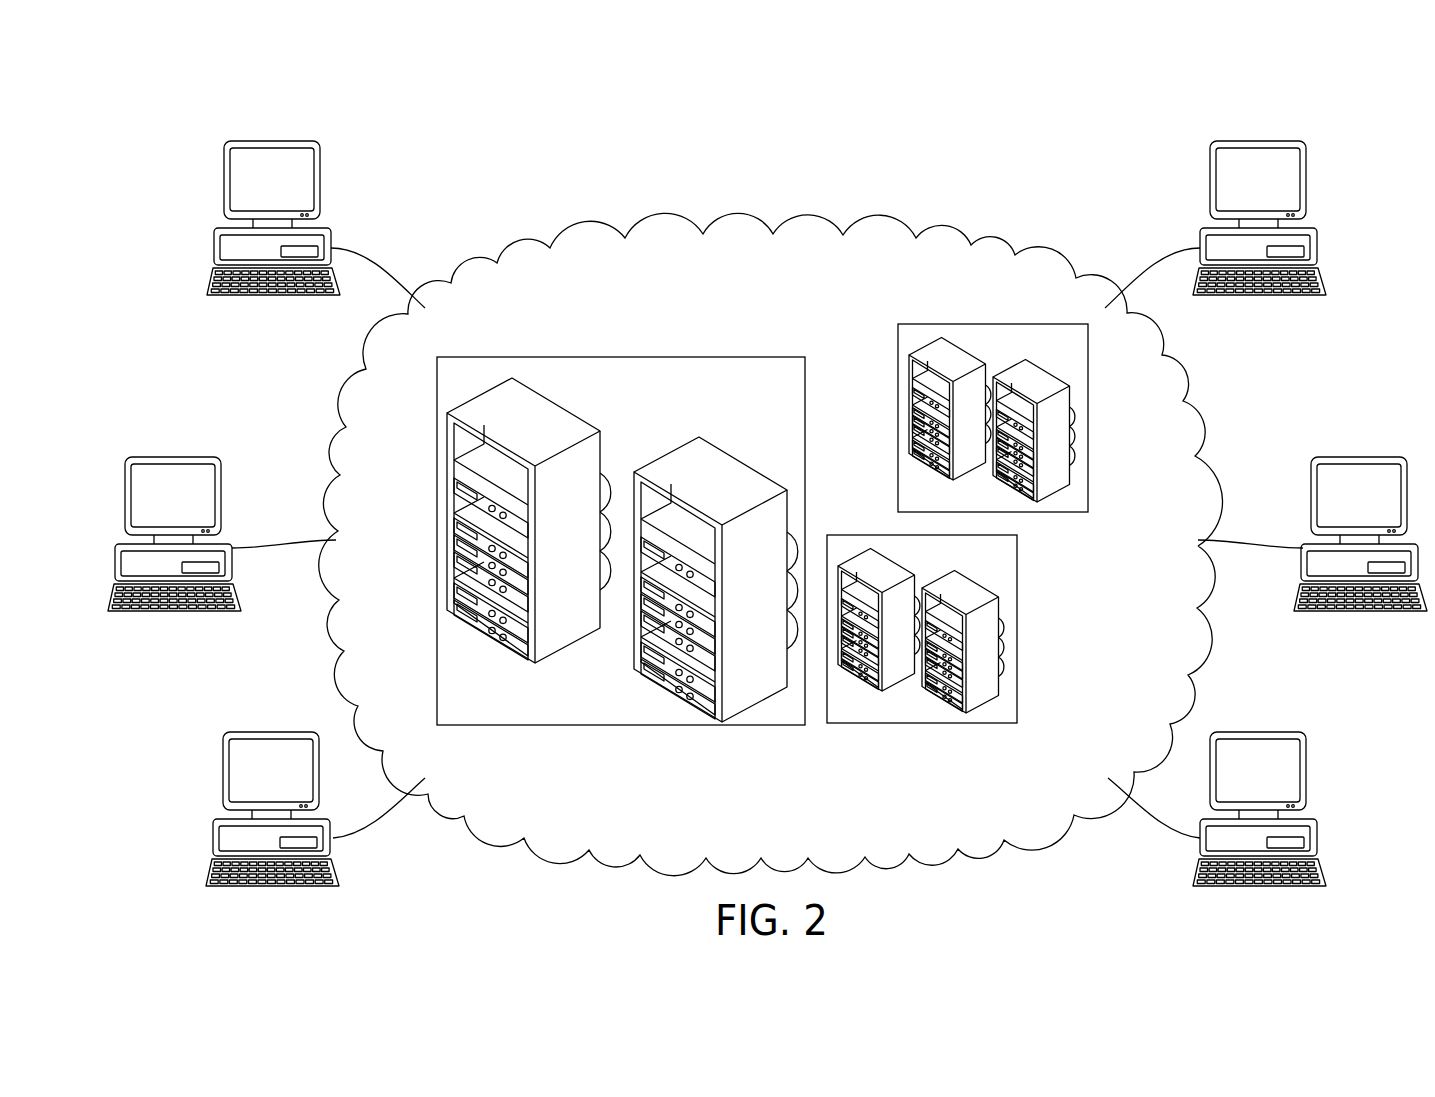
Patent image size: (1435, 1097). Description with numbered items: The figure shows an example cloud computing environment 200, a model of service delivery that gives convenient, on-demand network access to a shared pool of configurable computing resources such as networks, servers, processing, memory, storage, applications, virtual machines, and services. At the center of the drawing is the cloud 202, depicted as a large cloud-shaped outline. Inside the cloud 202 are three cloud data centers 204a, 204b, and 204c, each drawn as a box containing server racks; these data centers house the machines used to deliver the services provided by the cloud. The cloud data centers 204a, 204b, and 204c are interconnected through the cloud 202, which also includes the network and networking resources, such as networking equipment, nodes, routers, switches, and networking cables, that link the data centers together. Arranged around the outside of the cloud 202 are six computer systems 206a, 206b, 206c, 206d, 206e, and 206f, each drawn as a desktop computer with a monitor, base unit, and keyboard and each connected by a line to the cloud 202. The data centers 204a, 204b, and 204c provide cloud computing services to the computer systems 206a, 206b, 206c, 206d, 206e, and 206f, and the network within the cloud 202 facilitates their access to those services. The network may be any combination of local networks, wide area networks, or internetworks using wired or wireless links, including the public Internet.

The cloud computing environment 200 is at (518, 132).
The cloud 202 is at (850, 222).
The cloud data center 204a is at (620, 357).
The cloud data center 204b is at (1060, 513).
The cloud data center 204c is at (920, 725).
The computer system 206a is at (272, 141).
The computer system 206b is at (166, 458).
The computer system 206c is at (215, 852).
The computer system 206d is at (1323, 852).
The computer system 206e is at (1370, 458).
The computer system 206f is at (1268, 141).